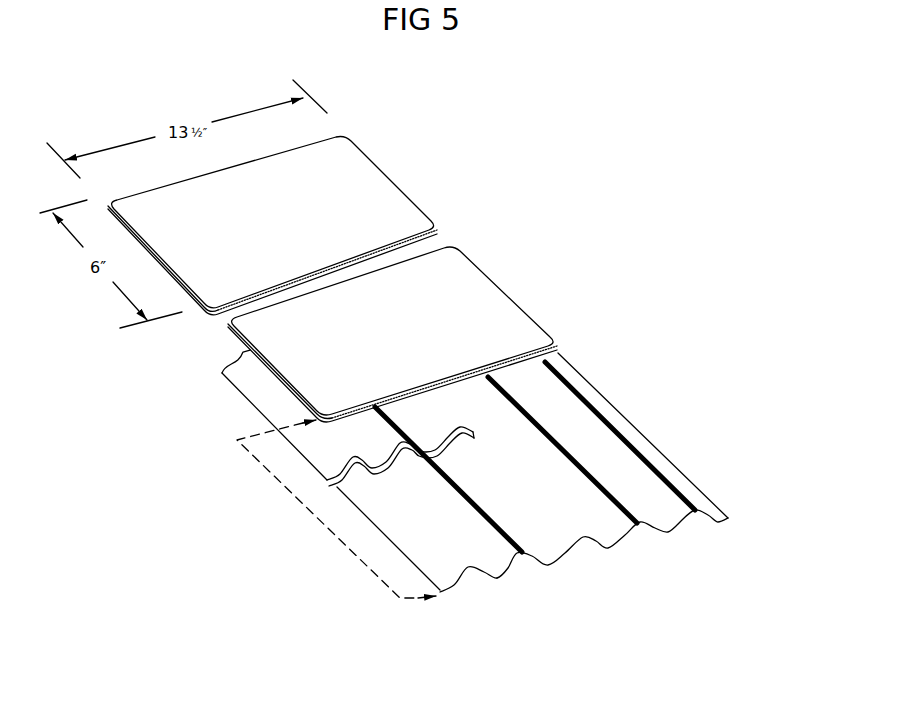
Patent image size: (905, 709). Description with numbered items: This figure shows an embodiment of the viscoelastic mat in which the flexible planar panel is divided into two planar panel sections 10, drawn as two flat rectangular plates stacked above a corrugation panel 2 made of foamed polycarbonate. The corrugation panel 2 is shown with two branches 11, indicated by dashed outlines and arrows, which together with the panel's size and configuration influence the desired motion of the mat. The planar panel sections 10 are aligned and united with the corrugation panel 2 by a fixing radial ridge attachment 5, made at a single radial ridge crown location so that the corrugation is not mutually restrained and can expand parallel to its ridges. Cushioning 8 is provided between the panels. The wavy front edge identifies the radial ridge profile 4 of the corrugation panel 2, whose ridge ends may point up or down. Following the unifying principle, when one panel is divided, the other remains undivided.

The planar panel sections 10 is at (355, 200).
The corrugation panel 2 is at (585, 391).
The fixing radial ridge attachment 5 is at (622, 427).
The radial ridge profile 4 is at (467, 573).
The cushioning 8 is at (506, 527).
The branches 11 is at (327, 445).